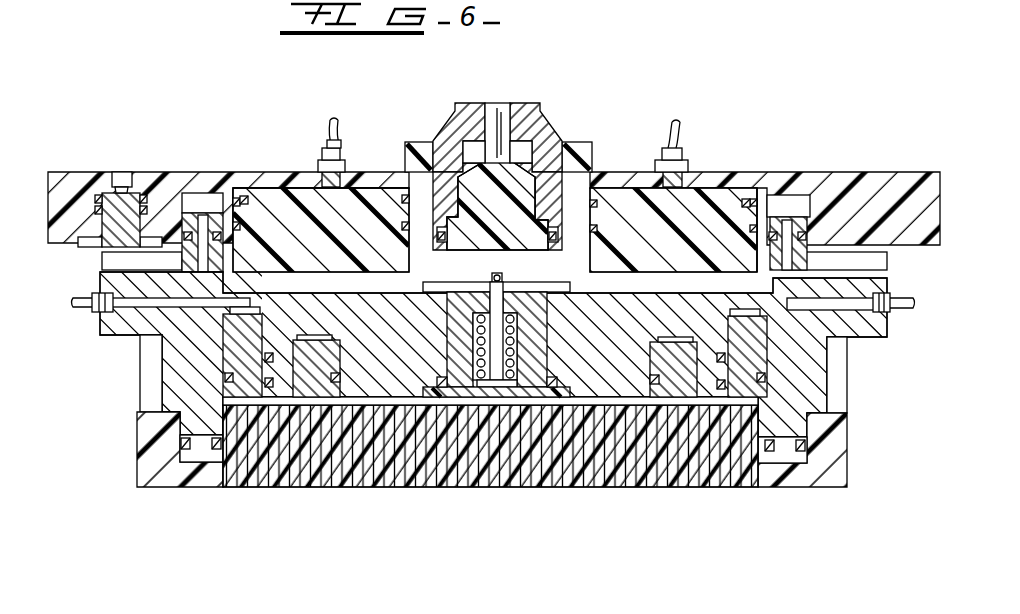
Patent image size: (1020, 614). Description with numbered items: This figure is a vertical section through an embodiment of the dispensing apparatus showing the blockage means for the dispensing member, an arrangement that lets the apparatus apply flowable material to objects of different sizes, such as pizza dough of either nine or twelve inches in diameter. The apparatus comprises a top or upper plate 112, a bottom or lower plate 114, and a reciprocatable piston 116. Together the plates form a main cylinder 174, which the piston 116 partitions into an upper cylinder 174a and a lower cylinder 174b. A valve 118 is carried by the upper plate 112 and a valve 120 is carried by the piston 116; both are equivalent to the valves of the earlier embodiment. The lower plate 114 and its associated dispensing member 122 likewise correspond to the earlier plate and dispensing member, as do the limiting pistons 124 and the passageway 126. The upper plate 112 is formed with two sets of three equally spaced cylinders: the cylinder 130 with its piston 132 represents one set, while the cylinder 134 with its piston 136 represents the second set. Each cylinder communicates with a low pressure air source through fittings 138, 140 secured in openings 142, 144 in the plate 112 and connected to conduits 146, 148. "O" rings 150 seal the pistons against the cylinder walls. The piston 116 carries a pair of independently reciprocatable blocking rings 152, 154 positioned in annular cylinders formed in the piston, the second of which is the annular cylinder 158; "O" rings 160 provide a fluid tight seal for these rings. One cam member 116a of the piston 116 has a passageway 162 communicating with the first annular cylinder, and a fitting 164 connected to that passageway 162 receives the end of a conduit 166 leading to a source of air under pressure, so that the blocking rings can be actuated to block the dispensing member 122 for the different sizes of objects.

The top or upper plate 112 is at (872, 176).
The bottom or lower plate 114 is at (837, 456).
The reciprocatable piston 116 is at (800, 362).
The cam member 116a is at (132, 340).
The valve 118 is at (510, 182).
The valve 120 is at (530, 378).
The dispensing member 122 is at (700, 488).
The limiting pistons 124 is at (128, 205).
The passageway 126 is at (863, 303).
The cylinder 130 is at (372, 190).
The piston 132 is at (270, 203).
The cylinder 134 is at (733, 205).
The piston 136 is at (760, 188).
The fitting 138 is at (306, 186).
The fitting 140 is at (684, 168).
The opening 142 is at (341, 163).
The opening 144 is at (666, 158).
The conduit 146 is at (341, 125).
The conduit 148 is at (676, 122).
The "O" rings 150 is at (248, 196).
The blocking ring 152 is at (250, 395).
The blocking ring 154 is at (303, 395).
The annular cylinder 158 is at (332, 352).
The "O" rings 160 is at (270, 378).
The passageway 162 is at (132, 305).
The fitting 164 is at (100, 292).
The conduit 166 is at (80, 300).
The main cylinder 174 is at (202, 200).
The upper cylinder 174a is at (332, 142).
The lower cylinder 174b is at (440, 393).